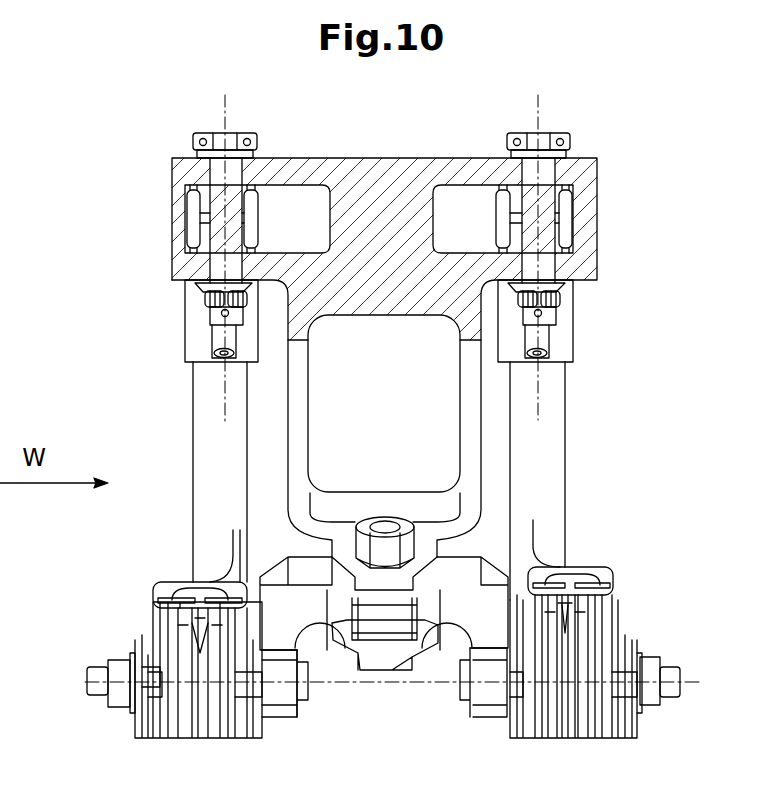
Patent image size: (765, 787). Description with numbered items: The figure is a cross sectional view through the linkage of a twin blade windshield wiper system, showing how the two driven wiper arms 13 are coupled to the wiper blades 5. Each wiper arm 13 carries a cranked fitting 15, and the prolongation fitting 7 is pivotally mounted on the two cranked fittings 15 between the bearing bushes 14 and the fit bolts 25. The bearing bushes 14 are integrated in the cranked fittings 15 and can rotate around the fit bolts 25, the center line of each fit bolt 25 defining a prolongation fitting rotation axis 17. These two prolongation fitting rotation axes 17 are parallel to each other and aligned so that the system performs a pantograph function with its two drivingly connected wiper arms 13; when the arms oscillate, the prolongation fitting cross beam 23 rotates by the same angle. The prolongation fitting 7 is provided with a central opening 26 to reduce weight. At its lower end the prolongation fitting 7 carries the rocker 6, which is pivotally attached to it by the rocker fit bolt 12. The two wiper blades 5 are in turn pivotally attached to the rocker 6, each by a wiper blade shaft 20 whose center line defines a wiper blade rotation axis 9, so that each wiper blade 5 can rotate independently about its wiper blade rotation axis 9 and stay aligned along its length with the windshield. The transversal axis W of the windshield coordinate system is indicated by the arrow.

The wiper blade 5 is at (180, 588).
The rocker 6 is at (370, 622).
The prolongation fitting 7 is at (363, 173).
The wiper blade rotation axis 9 is at (412, 683).
The rocker fit bolt 12 is at (385, 525).
The wiper arm 13 is at (208, 438).
The bearing bush 14 is at (203, 207).
The cranked fitting 15 is at (205, 345).
The prolongation fitting rotation axis 17 is at (227, 105).
The wiper blade shaft 20 is at (98, 677).
The prolongation fitting cross beam 23 is at (490, 260).
The fit bolt 25 is at (213, 242).
The central opening 26 is at (410, 413).